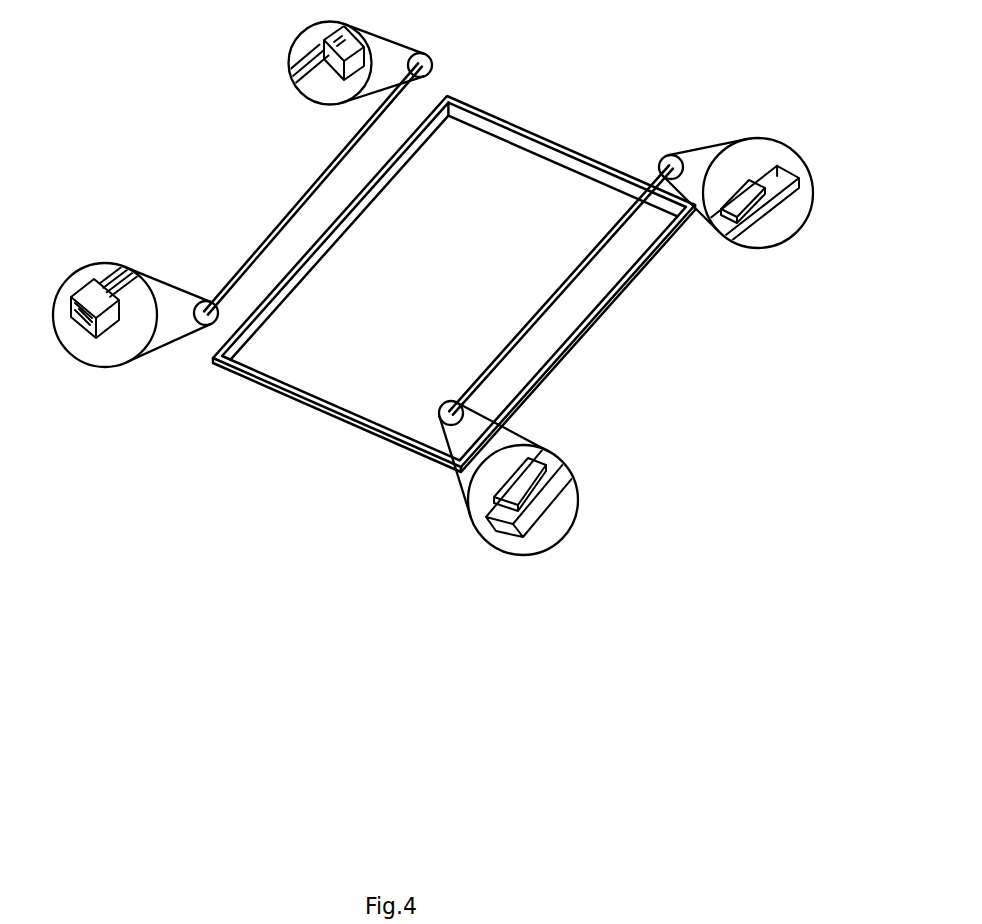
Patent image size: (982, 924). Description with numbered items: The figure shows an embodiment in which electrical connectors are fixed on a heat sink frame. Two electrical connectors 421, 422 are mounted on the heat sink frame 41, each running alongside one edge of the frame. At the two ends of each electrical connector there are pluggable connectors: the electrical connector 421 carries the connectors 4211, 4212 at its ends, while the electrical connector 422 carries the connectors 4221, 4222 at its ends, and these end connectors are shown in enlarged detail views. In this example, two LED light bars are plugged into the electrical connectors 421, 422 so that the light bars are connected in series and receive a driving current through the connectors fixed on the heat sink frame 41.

The heat sink frame 41 is at (322, 246).
The electrical connector 421 is at (267, 237).
The electrical connector 422 is at (557, 288).
The connector 4211 is at (105, 318).
The connector 4212 is at (355, 53).
The connector 4221 is at (535, 452).
The connector 4222 is at (783, 176).